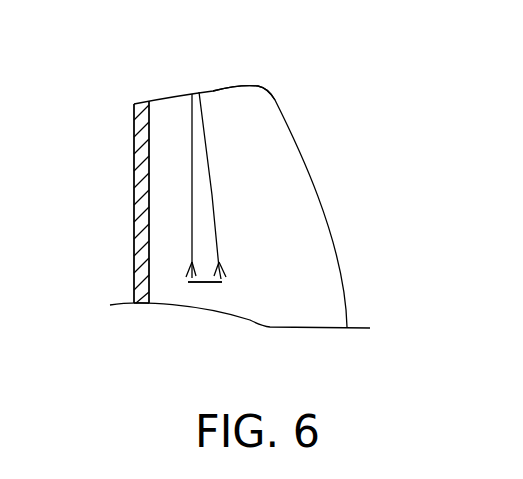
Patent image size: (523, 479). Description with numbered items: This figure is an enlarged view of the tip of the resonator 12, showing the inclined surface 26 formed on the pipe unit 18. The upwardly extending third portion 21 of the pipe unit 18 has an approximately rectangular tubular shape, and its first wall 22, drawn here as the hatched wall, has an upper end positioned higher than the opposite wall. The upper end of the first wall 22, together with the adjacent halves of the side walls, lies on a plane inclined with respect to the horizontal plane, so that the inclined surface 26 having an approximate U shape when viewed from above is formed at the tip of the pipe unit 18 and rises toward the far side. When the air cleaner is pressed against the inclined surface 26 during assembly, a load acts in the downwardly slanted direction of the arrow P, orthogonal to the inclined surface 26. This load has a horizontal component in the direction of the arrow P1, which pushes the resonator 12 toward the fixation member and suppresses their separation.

The resonator 12 is at (399, 154).
The pipe unit 18 is at (137, 173).
The third portion 21 is at (136, 236).
The first wall 22 is at (137, 267).
The inclined surface 26 is at (222, 90).
The arrow P is at (212, 195).
The arrow P1 is at (208, 283).